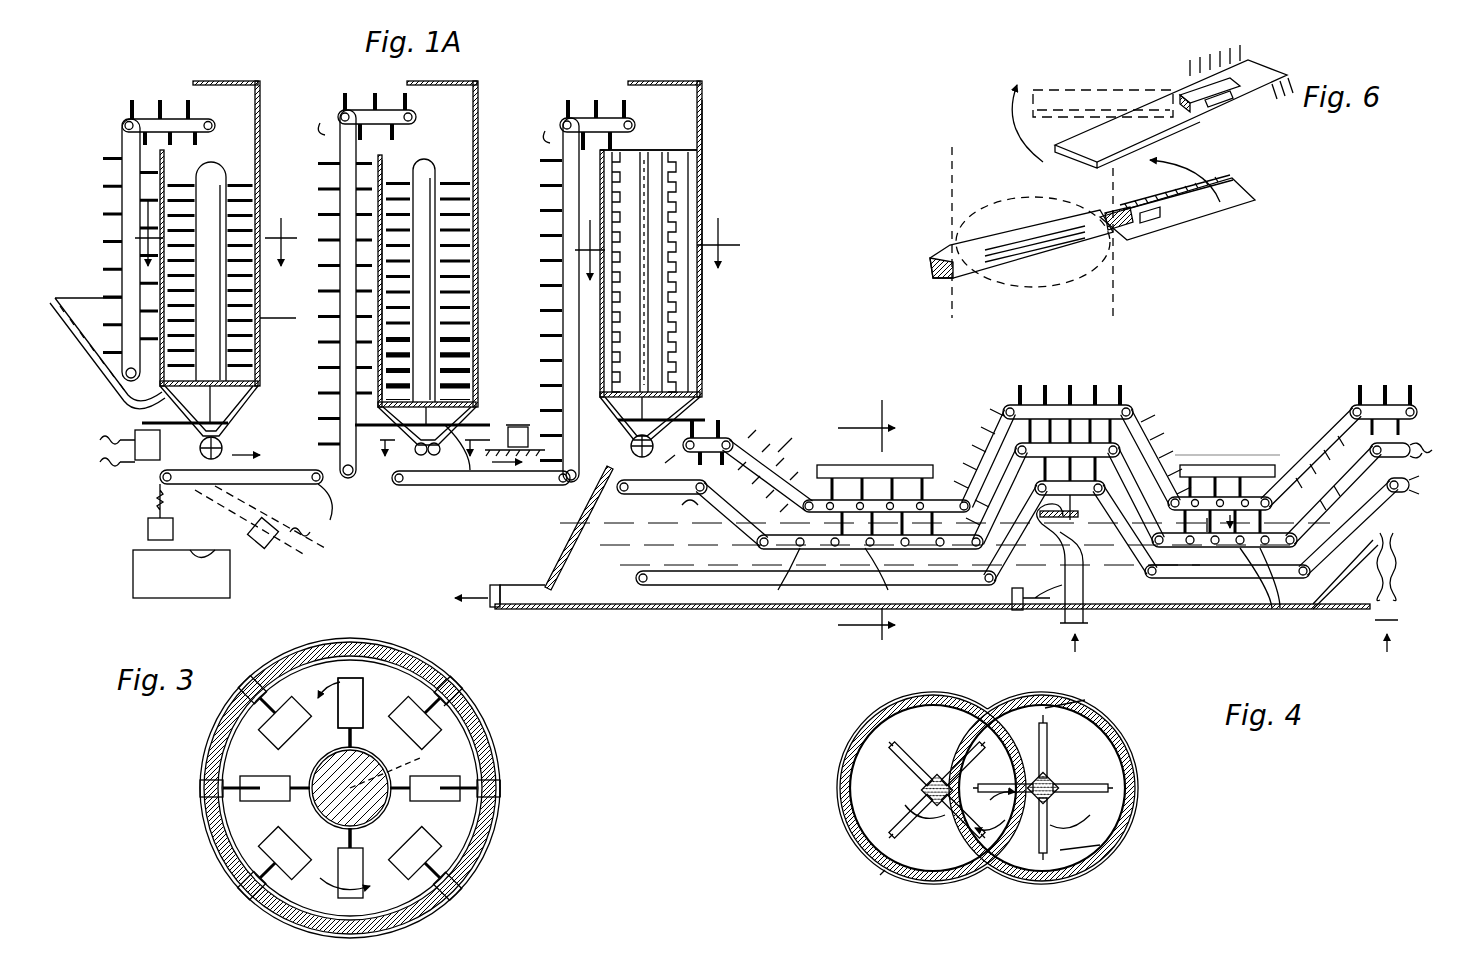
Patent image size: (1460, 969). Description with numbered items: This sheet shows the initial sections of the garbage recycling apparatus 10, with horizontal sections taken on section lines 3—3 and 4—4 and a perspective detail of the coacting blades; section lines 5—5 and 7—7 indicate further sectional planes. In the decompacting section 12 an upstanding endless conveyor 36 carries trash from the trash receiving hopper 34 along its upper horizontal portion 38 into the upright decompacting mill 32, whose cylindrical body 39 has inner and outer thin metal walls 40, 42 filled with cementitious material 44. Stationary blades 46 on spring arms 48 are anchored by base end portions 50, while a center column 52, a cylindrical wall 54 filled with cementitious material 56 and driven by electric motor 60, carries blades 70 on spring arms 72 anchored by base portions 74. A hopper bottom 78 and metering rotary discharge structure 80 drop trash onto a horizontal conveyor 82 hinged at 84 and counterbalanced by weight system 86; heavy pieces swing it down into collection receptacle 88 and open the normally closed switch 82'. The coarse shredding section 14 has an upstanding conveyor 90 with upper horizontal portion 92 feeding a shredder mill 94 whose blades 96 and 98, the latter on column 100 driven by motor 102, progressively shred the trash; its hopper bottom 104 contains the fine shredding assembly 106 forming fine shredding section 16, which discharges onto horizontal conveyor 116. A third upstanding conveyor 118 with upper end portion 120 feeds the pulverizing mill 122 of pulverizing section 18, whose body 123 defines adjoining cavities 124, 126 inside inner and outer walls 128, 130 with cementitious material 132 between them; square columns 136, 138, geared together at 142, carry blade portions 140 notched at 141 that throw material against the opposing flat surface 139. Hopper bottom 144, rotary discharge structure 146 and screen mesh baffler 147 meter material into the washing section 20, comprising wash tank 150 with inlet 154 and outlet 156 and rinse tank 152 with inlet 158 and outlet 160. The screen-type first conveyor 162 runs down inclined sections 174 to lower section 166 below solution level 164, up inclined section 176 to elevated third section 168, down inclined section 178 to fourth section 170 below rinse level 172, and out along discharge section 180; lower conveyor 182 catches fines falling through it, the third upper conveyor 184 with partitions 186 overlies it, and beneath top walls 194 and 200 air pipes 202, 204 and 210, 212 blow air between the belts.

In FIG. 1A, the garbage recycling apparatus 10 is at (706, 165).
In FIG. 1A, the decompacting section 12 is at (262, 180).
In FIG. 1A, the coarse shredding section 14 is at (478, 185).
In FIG. 1A, the fine shredding section 16 is at (430, 460).
In FIG. 1A, the pulverizing section 18 is at (708, 215).
In FIG. 1A, the washing section 20 is at (1212, 448).
In FIG. 1A, the section line 3— 3 is at (216, 253).
In FIG. 1A, the section line 4— 4 is at (657, 260).
In FIG. 1A, the section line 5— 5 is at (879, 521).
In FIG. 1A, the section line 7- 7 is at (431, 435).
In FIG. 1A, the upright decompacting mill 32 is at (235, 390).
In FIG. 1A, the trash receiving hopper 34 is at (95, 365).
In FIG. 1A, the upstanding endless conveyor 36 is at (120, 232).
In FIG. 1A, the upper horizontal portion 38 is at (152, 100).
In FIG. 1A, the upstanding cylindrical body 39 is at (278, 318).
In FIG. 3, the upstanding cylindrical body 39 is at (500, 783).
In FIG. 3, the inner thin metal wall 40 is at (410, 885).
In FIG. 3, the outer thin metal wall 42 is at (470, 868).
In FIG. 3, the cementitious material 44 is at (480, 715).
In FIG. 3, the stationary blades 46 is at (480, 745).
In FIG. 6, the stationary blades 46 is at (1150, 140).
In FIG. 3, the spring arms 48 is at (456, 700).
In FIG. 6, the spring arms 48 is at (1212, 100).
In FIG. 3, the base end portions 50 is at (455, 690).
In FIG. 6, the base end portions 50 is at (1185, 72).
In FIG. 1A, the center upstanding column 52 is at (220, 172).
In FIG. 3, the center upstanding column 52 is at (312, 798).
In FIG. 6, the center upstanding column 52 is at (1020, 196).
In FIG. 3, the thin metallic cylindrical wall 54 is at (362, 748).
In FIG. 3, the cementitious material 56 is at (338, 828).
In FIG. 1A, the electric motor 60 is at (138, 455).
In FIG. 1A, the blades 70 is at (178, 186).
In FIG. 3, the blades 70 is at (360, 690).
In FIG. 6, the blades 70 is at (1205, 205).
In FIG. 3, the spring arms 72 is at (340, 752).
In FIG. 6, the spring arms 72 is at (1125, 225).
In FIG. 3, the base portions 74 is at (397, 763).
In FIG. 6, the base portions 74 is at (1005, 262).
In FIG. 1A, the hopper bottom 78 is at (240, 410).
In FIG. 1A, the rotary discharge structure 80 is at (232, 442).
In FIG. 1A, the motor driven horizontal conveyor 82 is at (241, 493).
In FIG. 1A, the normally closed switch 82' is at (260, 535).
In FIG. 1A, the hinged support 84 is at (316, 510).
In FIG. 1A, the counterbalancing weight system 86 is at (155, 500).
In FIG. 1A, the collection receptacle 88 is at (133, 573).
In FIG. 1A, the upstanding conveyor 90 is at (330, 132).
In FIG. 1A, the upper horizontal portion 92 is at (390, 108).
In FIG. 1A, the shredder mill 94 is at (478, 330).
In FIG. 1A, the spring mounted blades 96 is at (465, 255).
In FIG. 1A, the blades 98 is at (440, 172).
In FIG. 1A, the column 100 is at (430, 292).
In FIG. 1A, the motor 102 is at (507, 428).
In FIG. 1A, the hopper bottom 104 is at (470, 478).
In FIG. 1A, the fine shredding assembly 106 is at (417, 462).
In FIG. 1A, the horizontal conveyor 116 is at (498, 488).
In FIG. 1A, the third upstanding conveyor 118 is at (556, 138).
In FIG. 1A, the horizontal upper end portion 120 is at (612, 116).
In FIG. 1A, the pulverizing mill 122 is at (698, 360).
In FIG. 4, the body 123 is at (890, 870).
In FIG. 4, the partial cylindrical internal cavity 124 is at (1070, 840).
In FIG. 4, the partial cylindrical internal cavity 126 is at (945, 850).
In FIG. 4, the inner wall 128 is at (1118, 835).
In FIG. 4, the outer wall 130 is at (1135, 795).
In FIG. 4, the cementitious material 132 is at (1125, 755).
In FIG. 1A, the square column 136 is at (628, 172).
In FIG. 4, the square column 136 is at (855, 820).
In FIG. 1A, the square column 138 is at (676, 170).
In FIG. 4, the square column 138 is at (1035, 775).
In FIG. 4, the flat surface 139 is at (955, 790).
In FIG. 1A, the blade portions 140 is at (496, 322).
In FIG. 4, the blade portions 140 is at (1050, 760).
In FIG. 1A, the notches 141 is at (738, 170).
In FIG. 4, the notches 141 is at (1045, 720).
In FIG. 1A, the gearing 142 is at (660, 420).
In FIG. 1A, the hopper bottom 144 is at (652, 440).
In FIG. 1A, the rotary discharge structure 146 is at (595, 500).
In FIG. 1A, the screen mesh baffler 147 is at (670, 442).
In FIG. 1A, the wash tank 150 is at (738, 610).
In FIG. 1A, the rinse tank 152 is at (1198, 600).
In FIG. 1A, the inlet 154 is at (1085, 610).
In FIG. 1A, the outlet 156 is at (500, 605).
In FIG. 1A, the inlet 158 is at (1375, 598).
In FIG. 1A, the outlet 160 is at (1012, 600).
In FIG. 1A, the first conveyor 162 is at (660, 497).
In FIG. 1A, the washing solution level 164 is at (690, 508).
In FIG. 1A, the lower section 166 is at (820, 560).
In FIG. 1A, the third section 168 is at (1082, 445).
In FIG. 1A, the fourth section 170 is at (1215, 548).
In FIG. 1A, the rinse water level 172 is at (1165, 435).
In FIG. 1A, the inclined sections 174 is at (735, 555).
In FIG. 1A, the inclined section 176 is at (985, 430).
In FIG. 1A, the inclined section 178 is at (1195, 465).
In FIG. 1A, the elevated discharge section 180 is at (1425, 440).
In FIG. 1A, the lower conveyor 182 is at (665, 585).
In FIG. 1A, the third upper conveyor 184 is at (778, 468).
In FIG. 1A, the partitions 186 is at (778, 452).
In FIG. 1A, the top wall 194 is at (848, 478).
In FIG. 1A, the top wall 200 is at (1232, 478).
In FIG. 1A, the transverse air pipe 202 is at (779, 577).
In FIG. 1A, the transverse air pipe 204 is at (897, 576).
In FIG. 1A, the air pipe 210 is at (1240, 495).
In FIG. 1A, the air pipe 212 is at (1265, 591).